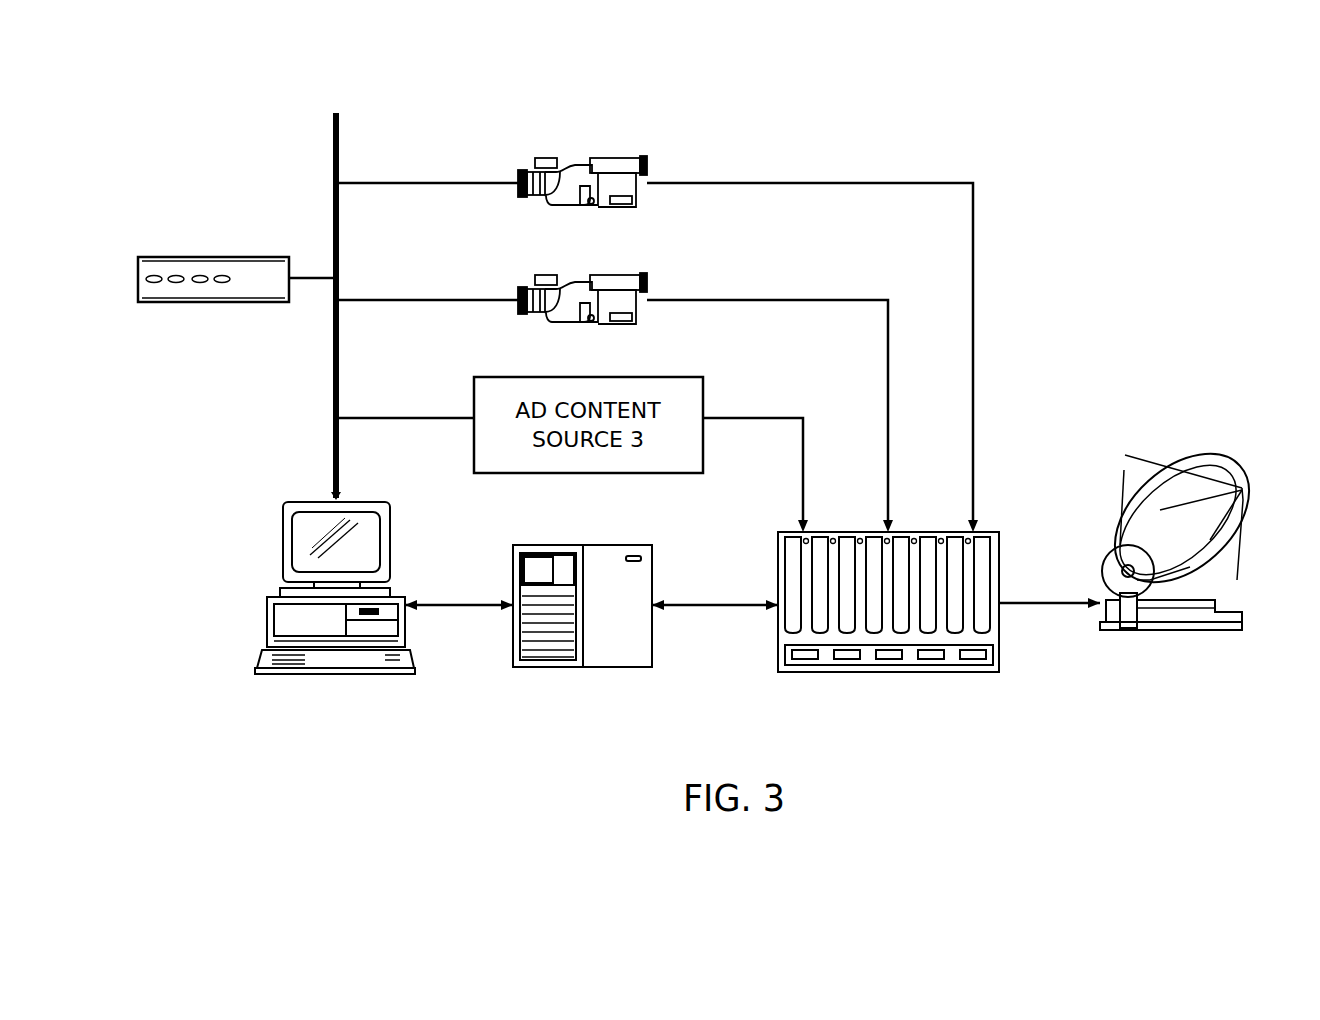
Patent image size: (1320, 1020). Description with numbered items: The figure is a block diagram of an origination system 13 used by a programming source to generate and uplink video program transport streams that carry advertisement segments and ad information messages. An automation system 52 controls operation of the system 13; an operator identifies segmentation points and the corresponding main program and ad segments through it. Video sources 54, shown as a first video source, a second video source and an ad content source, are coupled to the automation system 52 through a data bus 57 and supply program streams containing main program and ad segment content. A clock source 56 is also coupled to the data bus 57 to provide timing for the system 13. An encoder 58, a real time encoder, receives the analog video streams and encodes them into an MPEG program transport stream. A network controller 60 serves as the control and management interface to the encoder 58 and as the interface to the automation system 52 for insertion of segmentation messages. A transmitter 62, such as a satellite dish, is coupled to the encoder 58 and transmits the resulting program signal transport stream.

The origination system 13 is at (1008, 115).
The automation system 52 is at (283, 536).
The video sources 54 is at (620, 144).
The clock source 56 is at (210, 257).
The data bus 57 is at (333, 131).
The encoder 58 is at (990, 532).
The network controller 60 is at (611, 545).
The transmitter 62 is at (1155, 453).